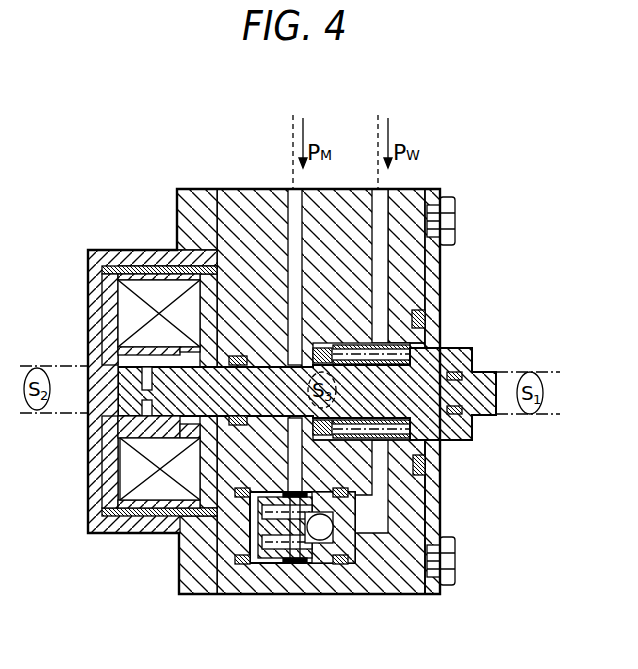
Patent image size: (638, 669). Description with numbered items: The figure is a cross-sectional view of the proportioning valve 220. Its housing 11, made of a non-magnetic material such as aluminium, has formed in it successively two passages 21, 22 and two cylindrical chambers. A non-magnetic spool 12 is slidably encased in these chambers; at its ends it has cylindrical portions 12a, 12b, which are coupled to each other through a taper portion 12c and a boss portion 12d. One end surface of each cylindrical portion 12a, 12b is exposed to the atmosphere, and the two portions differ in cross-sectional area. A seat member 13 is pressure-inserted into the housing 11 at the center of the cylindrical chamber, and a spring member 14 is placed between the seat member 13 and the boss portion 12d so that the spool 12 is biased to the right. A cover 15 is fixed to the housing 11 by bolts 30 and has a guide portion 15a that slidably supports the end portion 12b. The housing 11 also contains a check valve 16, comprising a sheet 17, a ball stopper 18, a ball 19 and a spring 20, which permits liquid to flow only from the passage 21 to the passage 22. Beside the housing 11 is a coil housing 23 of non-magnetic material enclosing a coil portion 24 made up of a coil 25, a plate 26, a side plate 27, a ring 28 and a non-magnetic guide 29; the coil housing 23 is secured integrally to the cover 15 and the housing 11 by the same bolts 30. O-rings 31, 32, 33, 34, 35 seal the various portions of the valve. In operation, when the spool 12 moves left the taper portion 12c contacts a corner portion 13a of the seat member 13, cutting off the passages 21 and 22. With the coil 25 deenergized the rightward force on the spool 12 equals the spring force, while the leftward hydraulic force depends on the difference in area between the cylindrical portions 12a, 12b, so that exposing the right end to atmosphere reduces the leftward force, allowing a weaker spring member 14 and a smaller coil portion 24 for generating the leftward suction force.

The proportioning valve 220 is at (246, 122).
The housing 11 is at (238, 195).
The spool 12 is at (402, 318).
The cylindrical portion 12a is at (130, 353).
The cylindrical portion 12b is at (478, 418).
The taper portion 12c is at (447, 440).
The boss portion 12d is at (450, 356).
The seat member 13 is at (432, 505).
The corner portion 13a is at (420, 480).
The spring member 14 is at (352, 262).
The cover 15 is at (433, 596).
The guide portion 15a is at (462, 362).
The check valve 16 is at (251, 584).
The sheet 17 is at (306, 565).
The ball stopper 18 is at (202, 548).
The ball 19 is at (330, 565).
The spring 20 is at (275, 565).
The passage 21 is at (382, 215).
The passage 22 is at (283, 192).
The coil housing 23 is at (193, 194).
The coil portion 24 is at (135, 490).
The coil 25 is at (110, 302).
The plate 26 is at (110, 430).
The side plate 27 is at (150, 514).
The ring 28 is at (132, 264).
The non-magnetic guide 29 is at (135, 462).
The bolts 30 is at (457, 203).
The O-ring 31 is at (428, 319).
The O-ring 32 is at (465, 413).
The O-ring 33 is at (200, 266).
The O-ring 34 is at (236, 590).
The O-ring 35 is at (350, 565).